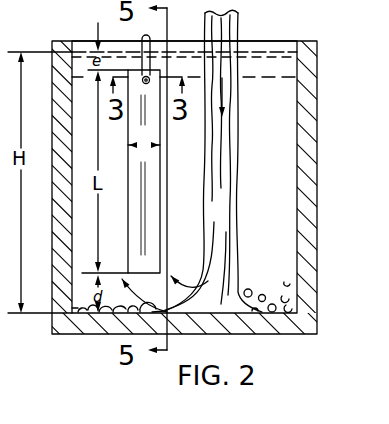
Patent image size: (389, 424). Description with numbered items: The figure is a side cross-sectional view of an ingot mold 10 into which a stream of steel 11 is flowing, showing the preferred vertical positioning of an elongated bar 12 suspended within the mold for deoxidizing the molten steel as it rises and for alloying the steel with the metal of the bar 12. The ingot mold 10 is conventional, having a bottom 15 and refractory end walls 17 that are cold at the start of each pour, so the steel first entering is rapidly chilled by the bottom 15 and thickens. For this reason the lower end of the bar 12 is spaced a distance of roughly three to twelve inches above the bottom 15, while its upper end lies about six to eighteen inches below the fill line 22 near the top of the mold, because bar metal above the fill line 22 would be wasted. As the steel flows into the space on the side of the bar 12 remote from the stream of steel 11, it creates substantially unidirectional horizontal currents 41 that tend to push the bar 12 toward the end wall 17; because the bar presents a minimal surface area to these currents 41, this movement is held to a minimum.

The ingot mold 10 is at (320, 115).
The stream of steel 11 is at (232, 132).
The elongated bar 12 is at (165, 178).
The bottom 15 is at (297, 334).
The end walls 17 is at (58, 215).
The fill line 22 is at (270, 50).
The currents 41 is at (165, 283).